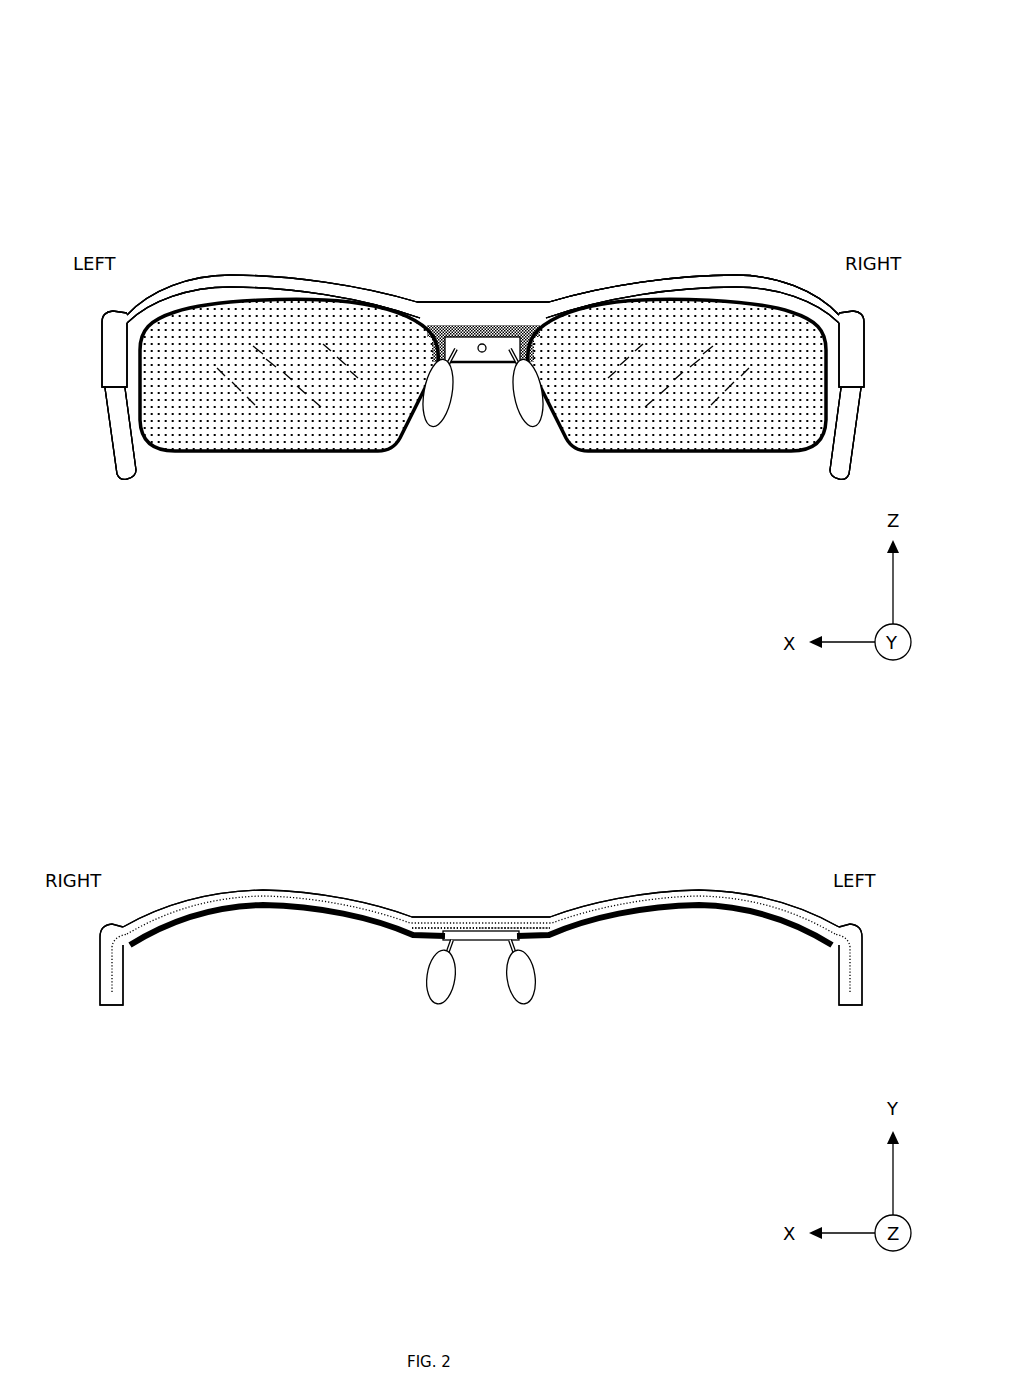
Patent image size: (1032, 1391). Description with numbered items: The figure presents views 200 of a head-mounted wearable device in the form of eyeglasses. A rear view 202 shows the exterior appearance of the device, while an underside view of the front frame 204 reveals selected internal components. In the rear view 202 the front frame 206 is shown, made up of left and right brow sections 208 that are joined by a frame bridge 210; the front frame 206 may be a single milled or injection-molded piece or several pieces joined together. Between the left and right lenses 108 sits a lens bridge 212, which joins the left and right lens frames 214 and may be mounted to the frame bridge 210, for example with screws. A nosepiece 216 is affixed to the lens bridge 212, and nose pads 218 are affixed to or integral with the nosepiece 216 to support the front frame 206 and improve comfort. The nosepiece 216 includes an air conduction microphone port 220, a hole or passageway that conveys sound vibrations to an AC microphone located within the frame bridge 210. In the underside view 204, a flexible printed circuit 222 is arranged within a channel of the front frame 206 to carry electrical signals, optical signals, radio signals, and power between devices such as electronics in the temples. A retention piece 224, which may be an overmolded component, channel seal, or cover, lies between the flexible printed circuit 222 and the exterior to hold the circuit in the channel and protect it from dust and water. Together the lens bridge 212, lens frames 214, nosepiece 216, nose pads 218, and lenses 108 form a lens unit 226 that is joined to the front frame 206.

The views 200 is at (767, 40).
The rear view 202 is at (224, 70).
The underside view of the front frame 204 is at (265, 790).
The front frame 206 is at (226, 890).
The brow section 208 is at (863, 168).
The frame bridge 210 is at (547, 208).
The lens bridge 212 is at (498, 363).
The lens frame 214 is at (675, 452).
The nosepiece 216 is at (395, 1172).
The nose pad 218 is at (362, 1068).
The air conduction (AC) microphone port 220 is at (483, 344).
The flexible printed circuit (FPC) 222 is at (517, 924).
The retention piece 224 is at (285, 888).
The lens unit 226 is at (812, 948).
The lens 108 is at (678, 410).